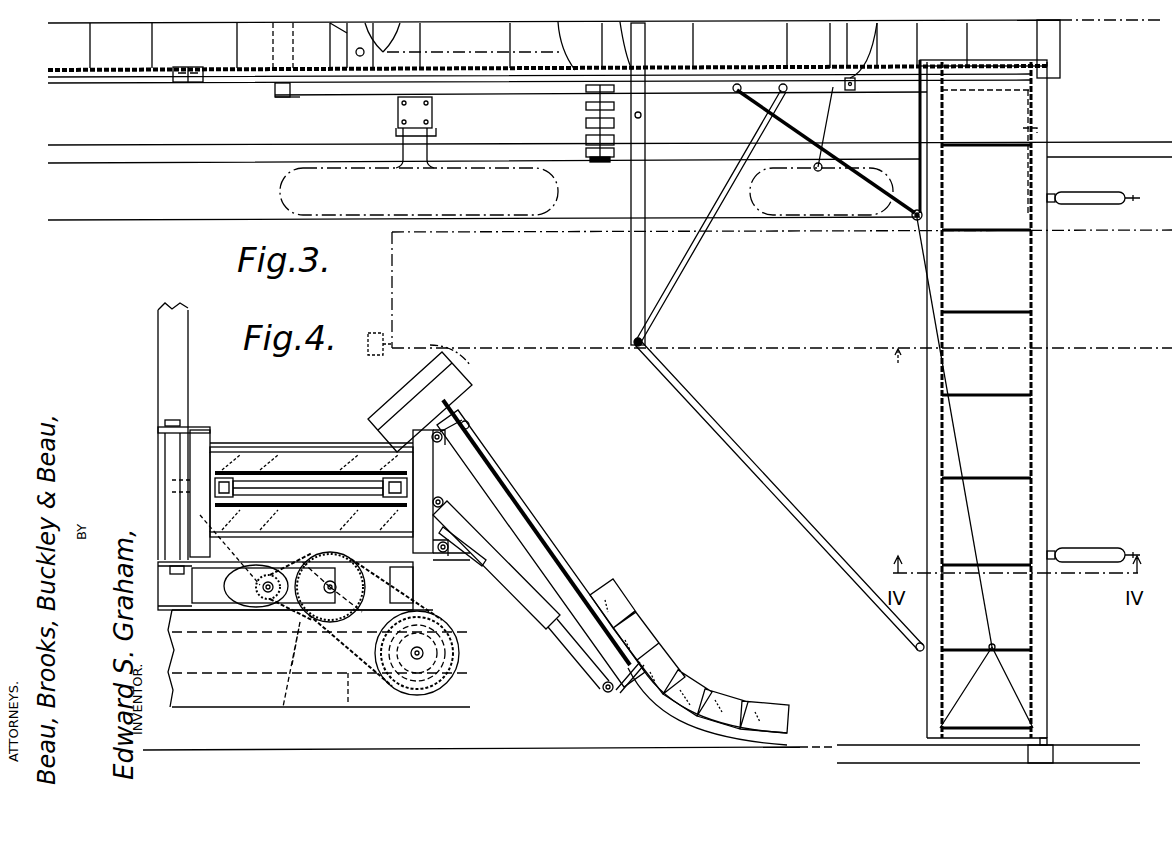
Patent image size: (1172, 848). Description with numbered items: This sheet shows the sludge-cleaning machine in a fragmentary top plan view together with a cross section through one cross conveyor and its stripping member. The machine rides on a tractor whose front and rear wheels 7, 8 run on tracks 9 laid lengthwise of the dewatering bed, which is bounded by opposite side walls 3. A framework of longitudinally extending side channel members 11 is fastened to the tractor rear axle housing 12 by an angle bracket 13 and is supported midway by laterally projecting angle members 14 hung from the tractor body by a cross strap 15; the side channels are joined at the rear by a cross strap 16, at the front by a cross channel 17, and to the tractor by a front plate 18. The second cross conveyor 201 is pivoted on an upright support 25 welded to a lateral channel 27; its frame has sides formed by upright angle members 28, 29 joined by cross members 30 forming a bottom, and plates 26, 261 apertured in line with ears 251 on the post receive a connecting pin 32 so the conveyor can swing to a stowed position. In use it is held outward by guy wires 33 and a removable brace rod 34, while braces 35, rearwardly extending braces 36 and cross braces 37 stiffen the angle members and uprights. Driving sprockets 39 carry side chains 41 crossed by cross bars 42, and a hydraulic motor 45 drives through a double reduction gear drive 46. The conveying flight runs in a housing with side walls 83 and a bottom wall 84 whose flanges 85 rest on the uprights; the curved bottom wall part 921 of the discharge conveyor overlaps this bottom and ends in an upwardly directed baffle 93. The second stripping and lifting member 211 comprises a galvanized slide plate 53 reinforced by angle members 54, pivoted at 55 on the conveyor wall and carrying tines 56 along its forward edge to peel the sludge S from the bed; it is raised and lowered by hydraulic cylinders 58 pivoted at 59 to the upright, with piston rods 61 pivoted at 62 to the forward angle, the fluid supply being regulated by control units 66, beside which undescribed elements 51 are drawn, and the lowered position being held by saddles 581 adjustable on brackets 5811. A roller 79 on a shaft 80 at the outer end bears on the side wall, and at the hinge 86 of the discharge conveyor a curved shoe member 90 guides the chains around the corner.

In FIG. 3, the side walls 3 is at (1095, 750).
In FIG. 3, the front wheels 7 is at (750, 188).
In FIG. 3, the rear wheels 8 is at (280, 192).
In FIG. 3, the tracks 9 is at (218, 191).
In FIG. 3, the side channel members 11 is at (337, 95).
In FIG. 4, the side channel members 11 is at (212, 597).
In FIG. 3, the tractor rear axle housing 12 is at (398, 135).
In FIG. 3, the angle bracket 13 is at (432, 112).
In FIG. 3, the laterally projecting angle members 14 is at (646, 142).
In FIG. 3, the cross strap 15 is at (645, 43).
In FIG. 3, the cross strap 16 is at (282, 97).
In FIG. 3, the cross channel 17 is at (1040, 131).
In FIG. 3, the front plate 18 is at (853, 92).
In FIG. 3, the second cross conveyor 201 is at (930, 389).
In FIG. 4, the second cross conveyor 201 is at (300, 470).
In FIG. 4, the second stripping and lifting member 211 is at (512, 491).
In FIG. 3, the upright support 25 is at (925, 215).
In FIG. 4, the upright support 25 is at (158, 352).
In FIG. 4, the ears 251 is at (158, 431).
In FIG. 4, the plate 26 is at (165, 568).
In FIG. 4, the plate 261 is at (167, 422).
In FIG. 4, the lateral channel 27 is at (205, 592).
In FIG. 4, the upright angle member 28 is at (192, 470).
In FIG. 4, the upright angle member 29 is at (433, 475).
In FIG. 4, the cross members 30 is at (311, 506).
In FIG. 3, the connecting pin 32 is at (915, 223).
In FIG. 4, the connecting pin 32 is at (172, 495).
In FIG. 3, the guy wires 33 is at (930, 295).
In FIG. 3, the brace rods 34 is at (700, 396).
In FIG. 3, the braces 35 is at (757, 131).
In FIG. 3, the rearwardly extending braces 36 is at (789, 127).
In FIG. 3, the cross braces 37 is at (920, 118).
In FIG. 4, the driving sprockets 39 is at (230, 452).
In FIG. 3, the side chains 41 is at (896, 68).
In FIG. 4, the side chains 41 is at (228, 510).
In FIG. 4, the cross bars 42 is at (285, 708).
In FIG. 4, the hydraulic motor 45 is at (200, 515).
In FIG. 4, the double reduction gear drive 46 is at (363, 590).
In FIG. 3, the coil 51 is at (586, 152).
In FIG. 4, the slide plate 53 is at (562, 553).
In FIG. 4, the angle members 54 is at (448, 432).
In FIG. 4, the pivot 55 is at (469, 428).
In FIG. 4, the tines 56 is at (690, 726).
In FIG. 3, the hydraulic cylinders 58 is at (1091, 192).
In FIG. 4, the hydraulic cylinders 58 is at (512, 590).
In FIG. 4, the saddles 581 is at (468, 575).
In FIG. 4, the brackets 5811 is at (438, 575).
In FIG. 4, the pivotal connection 59 is at (445, 505).
In FIG. 4, the piston rods 61 is at (576, 656).
In FIG. 4, the pivotal connection 62 is at (603, 688).
In FIG. 3, the control units 66 is at (586, 107).
In FIG. 3, the roller 79 is at (1042, 756).
In FIG. 3, the shafts 80 is at (1049, 740).
In FIG. 4, the side walls 83 is at (212, 444).
In FIG. 4, the bottom wall 84 is at (270, 470).
In FIG. 3, the flanges 85 is at (930, 443).
In FIG. 3, the hinge 86 is at (190, 82).
In FIG. 3, the curved shoe member 90 is at (190, 67).
In FIG. 4, the curved bottom wall part 921 is at (458, 657).
In FIG. 4, the baffle 93 is at (437, 562).
In FIG. 4, the sludge S is at (412, 374).